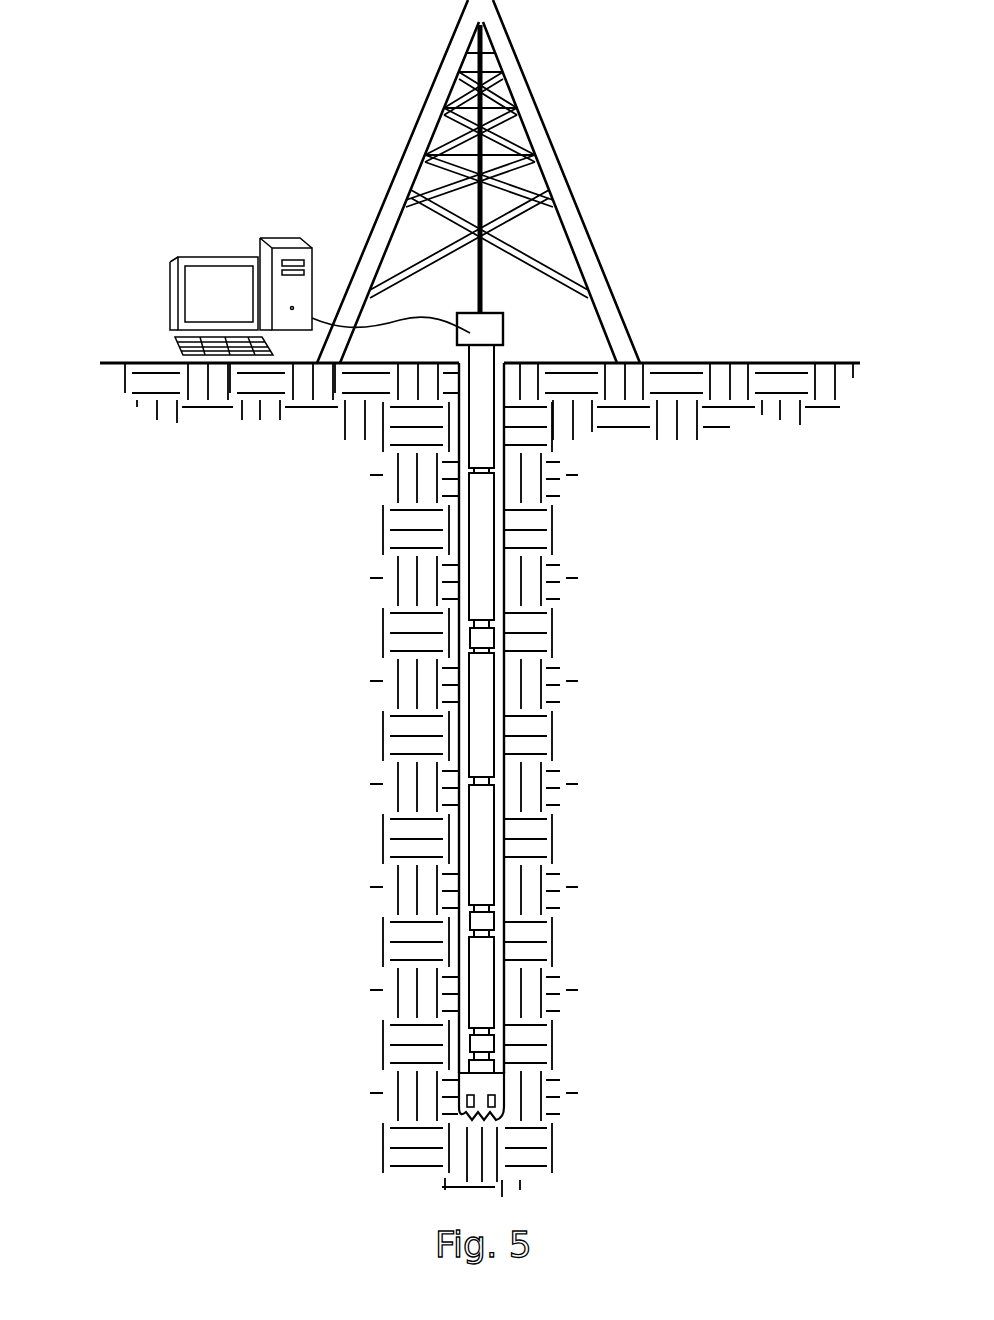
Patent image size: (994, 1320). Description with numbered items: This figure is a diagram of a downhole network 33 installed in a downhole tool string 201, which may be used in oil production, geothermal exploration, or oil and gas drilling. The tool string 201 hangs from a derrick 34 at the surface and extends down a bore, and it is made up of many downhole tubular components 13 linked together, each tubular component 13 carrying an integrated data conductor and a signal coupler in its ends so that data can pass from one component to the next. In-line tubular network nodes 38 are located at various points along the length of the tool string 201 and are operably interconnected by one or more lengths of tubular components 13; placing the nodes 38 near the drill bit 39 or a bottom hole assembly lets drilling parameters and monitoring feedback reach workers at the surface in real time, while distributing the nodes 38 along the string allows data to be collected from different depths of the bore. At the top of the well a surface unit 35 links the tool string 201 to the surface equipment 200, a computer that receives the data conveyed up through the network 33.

The downhole tubular component 13 is at (483, 995).
The downhole network 33 is at (222, 193).
The derrick 34 is at (548, 162).
The surface unit 35 is at (495, 330).
The in-line tubular network node 38 is at (483, 634).
The drill bit 39 is at (493, 1082).
The surface equipment 200 is at (145, 300).
The downhole tool string 201 is at (523, 732).